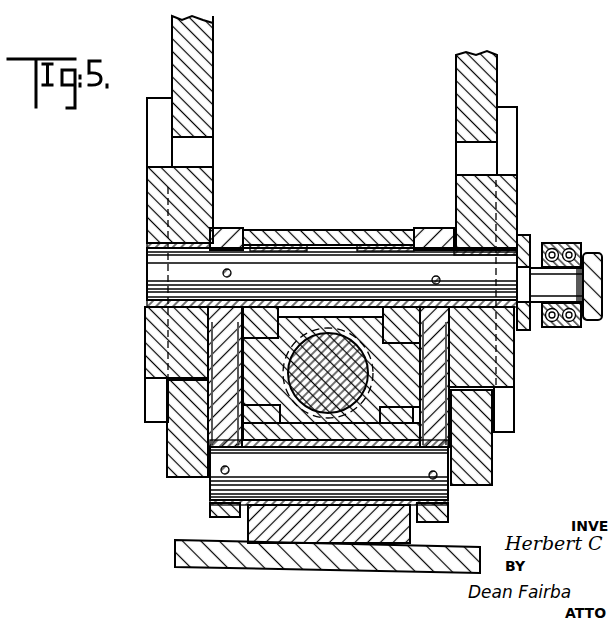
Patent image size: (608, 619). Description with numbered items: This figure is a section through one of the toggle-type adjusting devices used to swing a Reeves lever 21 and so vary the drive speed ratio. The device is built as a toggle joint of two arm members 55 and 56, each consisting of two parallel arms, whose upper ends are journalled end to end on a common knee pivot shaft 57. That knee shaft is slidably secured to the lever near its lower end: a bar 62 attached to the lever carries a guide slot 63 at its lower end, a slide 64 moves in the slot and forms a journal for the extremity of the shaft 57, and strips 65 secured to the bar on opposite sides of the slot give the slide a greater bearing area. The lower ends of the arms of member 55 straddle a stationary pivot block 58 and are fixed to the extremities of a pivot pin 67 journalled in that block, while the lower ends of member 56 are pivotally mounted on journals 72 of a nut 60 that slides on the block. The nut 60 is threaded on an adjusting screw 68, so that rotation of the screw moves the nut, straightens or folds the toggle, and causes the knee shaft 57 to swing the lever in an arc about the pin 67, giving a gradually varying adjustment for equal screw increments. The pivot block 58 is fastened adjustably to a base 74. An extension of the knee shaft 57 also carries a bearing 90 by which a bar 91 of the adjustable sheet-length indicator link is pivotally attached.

The Reeves lever 21 is at (216, 39).
The bar 62 is at (197, 71).
The guide slot 63 is at (204, 147).
The strip 65 is at (147, 143).
The slide 64 is at (197, 181).
The arm member 55 is at (222, 230).
The arm member 56 is at (349, 232).
The knee pivot shaft 57 is at (263, 264).
The bearing 90 is at (558, 243).
The bar 91 is at (558, 327).
The journal 72 is at (250, 390).
The adjusting screw 68 is at (316, 393).
The nut 60 is at (356, 403).
The pivot pin 67 is at (447, 490).
The pivot block 58 is at (404, 520).
The base 74 is at (213, 556).